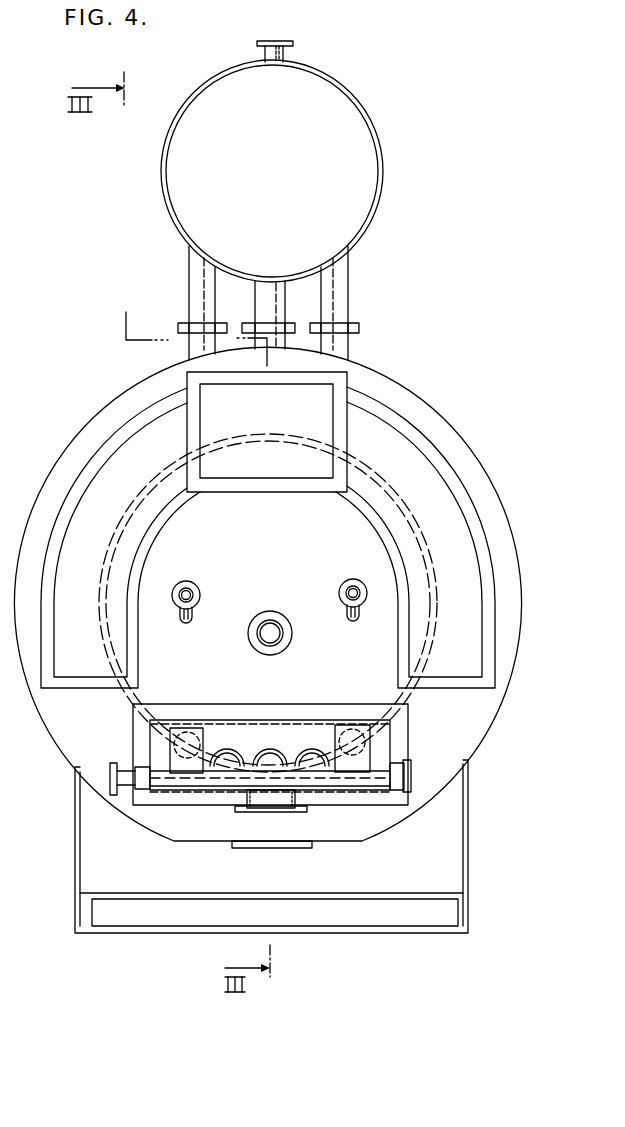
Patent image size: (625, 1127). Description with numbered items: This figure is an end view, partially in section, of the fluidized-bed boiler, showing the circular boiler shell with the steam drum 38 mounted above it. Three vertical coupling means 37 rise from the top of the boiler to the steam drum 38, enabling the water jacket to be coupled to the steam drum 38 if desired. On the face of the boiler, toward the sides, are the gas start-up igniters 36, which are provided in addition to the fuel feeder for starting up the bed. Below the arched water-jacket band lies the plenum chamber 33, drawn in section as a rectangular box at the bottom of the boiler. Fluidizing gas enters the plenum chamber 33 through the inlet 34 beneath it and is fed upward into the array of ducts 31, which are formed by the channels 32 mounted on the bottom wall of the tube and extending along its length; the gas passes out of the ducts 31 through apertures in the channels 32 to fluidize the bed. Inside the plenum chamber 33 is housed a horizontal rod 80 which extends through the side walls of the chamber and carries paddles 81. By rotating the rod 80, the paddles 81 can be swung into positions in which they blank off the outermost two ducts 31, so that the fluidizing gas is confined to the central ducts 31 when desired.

The ducts 31 is at (228, 772).
The channels 32 is at (236, 752).
The plenum chamber 33 is at (279, 611).
The inlet 34 is at (282, 800).
The gas start-up igniters 36 is at (192, 582).
The means for coupling the water jacket to a steam drum 37 is at (348, 293).
The steam drum 38 is at (291, 167).
The rod 80 is at (113, 797).
The paddles 81 is at (183, 765).